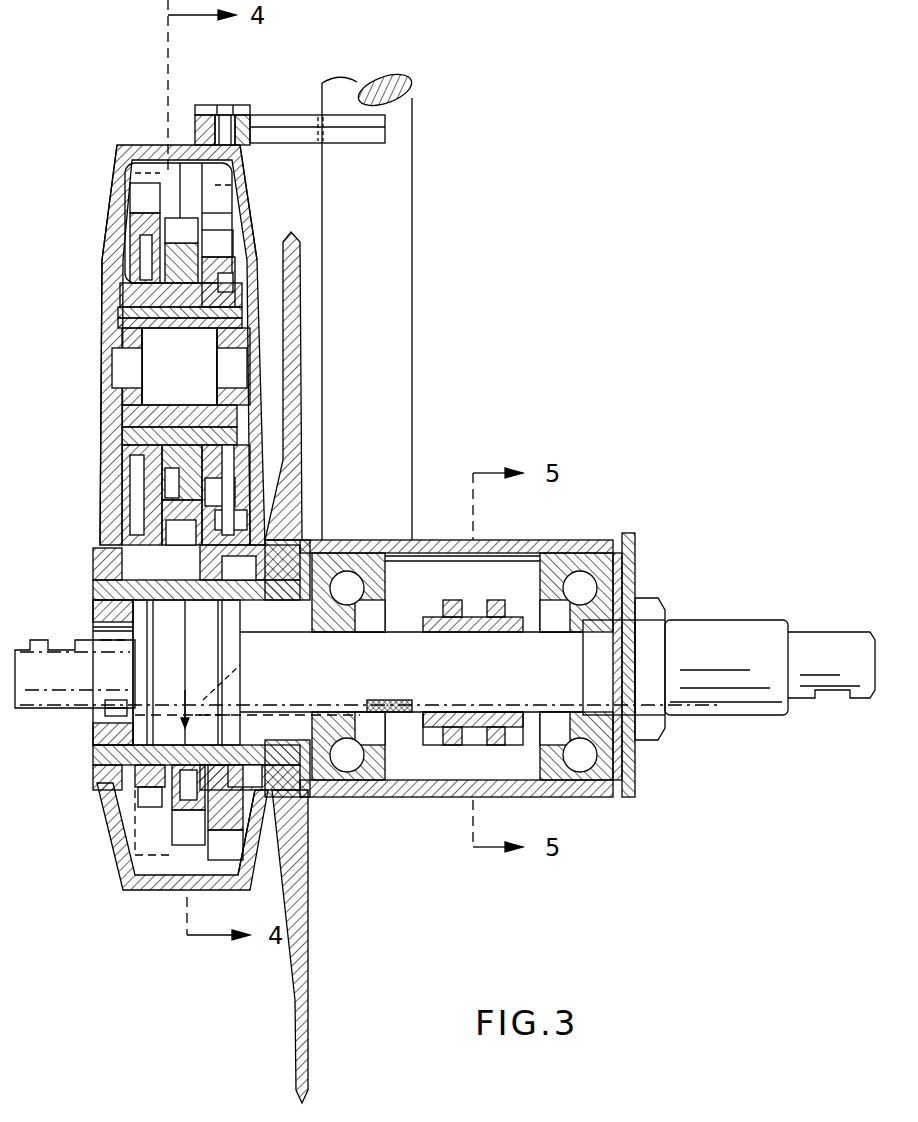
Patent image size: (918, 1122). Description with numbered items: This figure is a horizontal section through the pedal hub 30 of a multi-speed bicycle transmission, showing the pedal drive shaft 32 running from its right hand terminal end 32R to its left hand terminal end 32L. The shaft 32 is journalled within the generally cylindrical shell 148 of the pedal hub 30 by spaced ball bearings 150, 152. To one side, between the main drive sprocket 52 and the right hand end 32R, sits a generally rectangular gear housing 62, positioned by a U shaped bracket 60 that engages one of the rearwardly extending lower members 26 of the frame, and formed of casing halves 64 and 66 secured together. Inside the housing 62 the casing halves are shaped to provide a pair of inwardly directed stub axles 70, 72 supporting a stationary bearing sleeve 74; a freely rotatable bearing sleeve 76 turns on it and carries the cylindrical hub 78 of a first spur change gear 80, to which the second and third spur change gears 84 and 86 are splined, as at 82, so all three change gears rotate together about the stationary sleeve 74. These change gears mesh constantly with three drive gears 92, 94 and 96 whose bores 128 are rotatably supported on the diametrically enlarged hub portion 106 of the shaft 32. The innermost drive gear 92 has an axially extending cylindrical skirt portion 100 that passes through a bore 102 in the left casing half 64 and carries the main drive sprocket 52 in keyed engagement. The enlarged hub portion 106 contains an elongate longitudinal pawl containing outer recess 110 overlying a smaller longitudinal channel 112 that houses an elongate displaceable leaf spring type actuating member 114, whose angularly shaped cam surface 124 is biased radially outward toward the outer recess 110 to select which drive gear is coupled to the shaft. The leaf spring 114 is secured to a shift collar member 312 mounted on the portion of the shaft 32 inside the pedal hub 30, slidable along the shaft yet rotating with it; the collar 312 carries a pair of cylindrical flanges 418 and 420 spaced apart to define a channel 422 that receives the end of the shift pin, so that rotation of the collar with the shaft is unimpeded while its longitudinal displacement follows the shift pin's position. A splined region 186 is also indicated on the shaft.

The rearwardly extending lower member 26 is at (405, 308).
The pedal hub 30 is at (578, 530).
The pedal drive shaft 32 is at (304, 662).
The right hand terminal end 32R is at (20, 650).
The left hand terminal end 32L is at (874, 650).
The main drive sprocket 52 is at (303, 307).
The U shaped bracket 60 is at (283, 114).
The gear housing 62 is at (116, 155).
The casing half 64 is at (248, 182).
The casing half 66 is at (118, 192).
The stub axle 70 is at (122, 345).
The stub axle 72 is at (225, 338).
The stationary bearing sleeve 74 is at (157, 332).
The bearing sleeve 76 is at (181, 366).
The cylindrical hub 78 is at (120, 313).
The first spur change gear 80 is at (248, 275).
The spline 82 is at (125, 288).
The second spur change gear 84 is at (192, 226).
The third spur change gear 86 is at (135, 222).
The drive gear 92 is at (205, 852).
The drive gear 94 is at (178, 814).
The drive gear 96 is at (110, 792).
The skirt portion 100 is at (224, 582).
The bore 102 is at (290, 540).
The enlarged hub portion 106 is at (153, 689).
The outer recess 110 is at (100, 728).
The channel 112 is at (112, 700).
The leaf spring type actuating member 114 is at (232, 708).
The cam surface 124 is at (233, 672).
The bore 128 is at (162, 603).
The cylindrical shell 148 is at (488, 540).
The ball bearing 150 is at (636, 574).
The ball bearing 152 is at (347, 578).
The spline 186 is at (372, 702).
The shift collar member 312 is at (470, 740).
The cylindrical flange 418 is at (450, 600).
The cylindrical flange 420 is at (497, 630).
The channel 422 is at (488, 612).